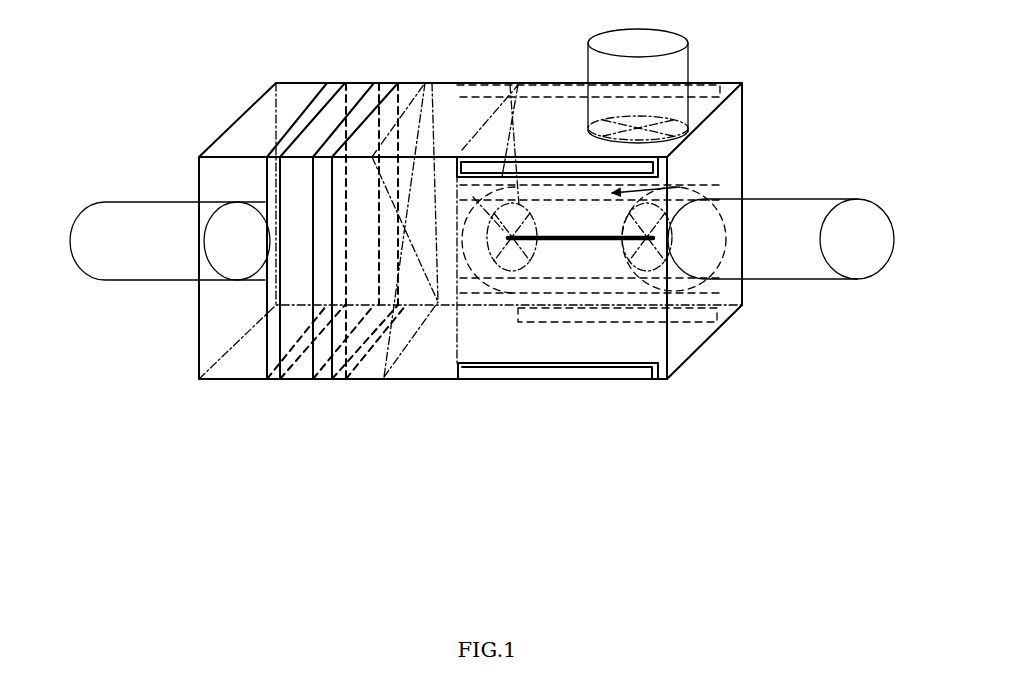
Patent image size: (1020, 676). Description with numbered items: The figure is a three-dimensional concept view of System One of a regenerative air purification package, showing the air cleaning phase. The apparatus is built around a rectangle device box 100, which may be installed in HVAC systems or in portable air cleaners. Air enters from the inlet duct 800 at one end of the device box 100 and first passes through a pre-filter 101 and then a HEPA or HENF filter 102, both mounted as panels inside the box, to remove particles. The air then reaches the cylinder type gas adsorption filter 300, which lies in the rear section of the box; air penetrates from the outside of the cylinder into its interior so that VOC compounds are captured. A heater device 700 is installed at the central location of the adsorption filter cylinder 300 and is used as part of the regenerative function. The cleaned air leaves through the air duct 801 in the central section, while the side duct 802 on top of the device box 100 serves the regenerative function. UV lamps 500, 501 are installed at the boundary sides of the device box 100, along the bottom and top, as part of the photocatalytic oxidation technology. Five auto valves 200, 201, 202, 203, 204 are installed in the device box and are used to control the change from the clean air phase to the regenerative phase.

The device box 100 is at (223, 384).
The pre-filter 101 is at (295, 130).
The HEPA or HENF filter 102 is at (365, 108).
The auto valve 200 is at (517, 258).
The auto valve 201 is at (420, 123).
The auto valve 202 is at (508, 135).
The auto valve 203 is at (660, 262).
The auto valve 204 is at (657, 128).
The gas adsorption filter cylinder 300 is at (680, 187).
The UV lamp 500 is at (563, 368).
The UV lamp 501 is at (568, 163).
The heater device 700 is at (588, 244).
The duct 800 is at (130, 228).
The air duct 801 is at (790, 258).
The side duct 802 is at (685, 62).